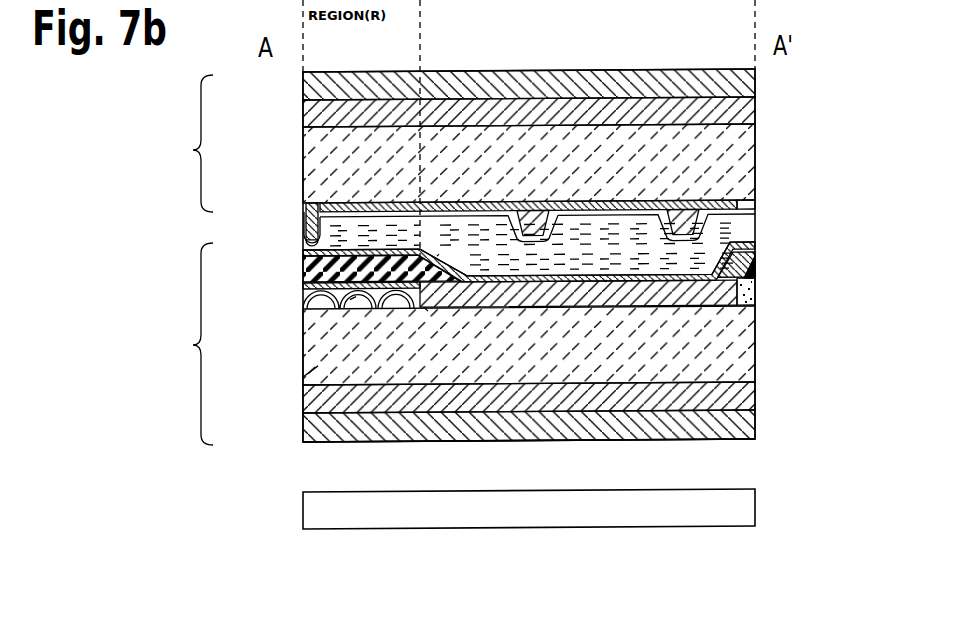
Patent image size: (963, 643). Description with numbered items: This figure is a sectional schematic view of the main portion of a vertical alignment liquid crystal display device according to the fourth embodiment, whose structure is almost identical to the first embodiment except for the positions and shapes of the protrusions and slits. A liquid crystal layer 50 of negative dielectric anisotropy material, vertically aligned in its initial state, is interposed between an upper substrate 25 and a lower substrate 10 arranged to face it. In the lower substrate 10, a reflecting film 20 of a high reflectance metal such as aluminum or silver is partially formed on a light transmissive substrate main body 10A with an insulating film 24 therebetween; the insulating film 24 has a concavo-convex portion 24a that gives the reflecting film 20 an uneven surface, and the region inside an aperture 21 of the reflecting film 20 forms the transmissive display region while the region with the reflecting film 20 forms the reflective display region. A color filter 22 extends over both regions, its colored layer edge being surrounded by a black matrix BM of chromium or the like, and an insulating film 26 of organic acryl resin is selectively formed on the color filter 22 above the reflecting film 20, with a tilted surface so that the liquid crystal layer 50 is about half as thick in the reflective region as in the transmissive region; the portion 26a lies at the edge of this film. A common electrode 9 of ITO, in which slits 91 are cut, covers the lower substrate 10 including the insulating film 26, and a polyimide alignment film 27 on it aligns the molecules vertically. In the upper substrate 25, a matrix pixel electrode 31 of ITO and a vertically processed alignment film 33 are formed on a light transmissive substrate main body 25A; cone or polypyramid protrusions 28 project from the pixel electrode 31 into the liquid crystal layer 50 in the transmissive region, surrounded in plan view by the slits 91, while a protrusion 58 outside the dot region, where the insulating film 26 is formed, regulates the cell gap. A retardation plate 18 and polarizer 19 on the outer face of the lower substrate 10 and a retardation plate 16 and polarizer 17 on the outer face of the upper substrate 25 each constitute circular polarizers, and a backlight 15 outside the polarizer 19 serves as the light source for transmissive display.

The polarizer 17 is at (755, 85).
The retardation plate 16 is at (755, 112).
The substrate main body 25A is at (755, 150).
The alignment film 33 is at (755, 207).
The pixel electrode 31 is at (755, 216).
The liquid crystal layer 50 is at (755, 226).
The alignment film 27 is at (755, 243).
The common electrode 9 is at (858, 257).
The insulating film 26 is at (812, 304).
The reflective layer end portion 26a is at (755, 258).
The black matrix BM is at (842, 331).
The color filter 22 is at (743, 360).
The substrate main body 10A is at (733, 393).
The retardation plate 18 is at (737, 421).
The polarizer 19 is at (745, 440).
The backlight 15 is at (742, 503).
The protrusions 28 is at (684, 208).
The protrusion 58 is at (304, 236).
The reflecting film 20 is at (300, 291).
The concavo-convex portion 24a is at (303, 377).
The insulating film 24 is at (351, 300).
The aperture 21 is at (425, 310).
The slits 91 is at (605, 284).
The upper substrate 25 is at (183, 143).
The lower substrate 10 is at (184, 344).